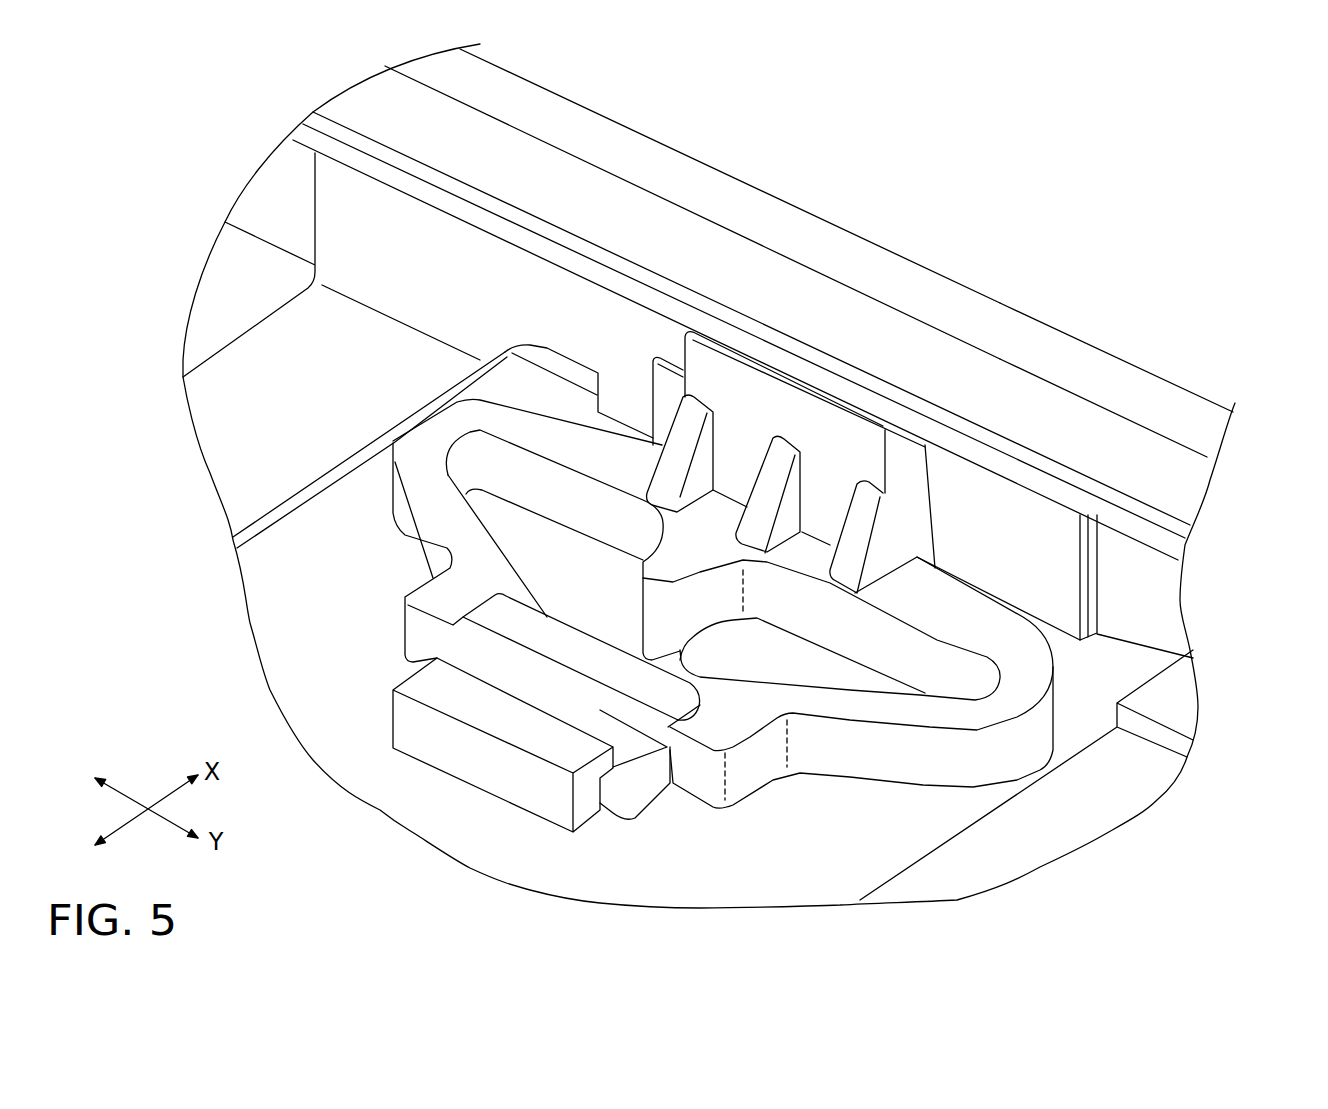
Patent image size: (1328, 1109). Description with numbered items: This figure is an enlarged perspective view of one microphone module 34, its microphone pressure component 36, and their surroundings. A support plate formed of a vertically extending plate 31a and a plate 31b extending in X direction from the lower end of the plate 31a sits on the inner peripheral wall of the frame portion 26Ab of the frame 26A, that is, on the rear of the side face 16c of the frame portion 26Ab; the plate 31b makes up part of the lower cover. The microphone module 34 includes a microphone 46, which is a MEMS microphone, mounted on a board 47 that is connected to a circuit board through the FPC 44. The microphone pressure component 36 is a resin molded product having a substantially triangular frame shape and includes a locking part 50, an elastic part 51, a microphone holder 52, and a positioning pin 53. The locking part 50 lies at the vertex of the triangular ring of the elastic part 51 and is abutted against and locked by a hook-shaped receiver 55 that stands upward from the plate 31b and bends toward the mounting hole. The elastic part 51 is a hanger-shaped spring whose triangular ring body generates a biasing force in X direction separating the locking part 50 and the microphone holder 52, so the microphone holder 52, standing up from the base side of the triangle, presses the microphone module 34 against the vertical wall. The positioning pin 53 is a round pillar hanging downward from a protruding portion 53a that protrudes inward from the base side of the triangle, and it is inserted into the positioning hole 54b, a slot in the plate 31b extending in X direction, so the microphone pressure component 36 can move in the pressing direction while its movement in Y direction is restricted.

The side face 16c is at (1140, 364).
The frame 26A is at (692, 204).
The frame portion 26Ab is at (718, 170).
The plate 31a is at (1147, 588).
The plate 31b is at (310, 643).
The microphone module 34 is at (967, 475).
The microphone pressure component 36 is at (818, 784).
The FPC 44 is at (428, 275).
The microphone 46 is at (750, 393).
The board 47 is at (1027, 535).
The locking part 50 is at (650, 758).
The elastic part 51 is at (932, 765).
The microphone holder 52 is at (822, 425).
The positioning pin 53 is at (627, 645).
The protruding portion 53a is at (662, 556).
The positioning hole 54b is at (632, 655).
The receiver 55 is at (488, 712).